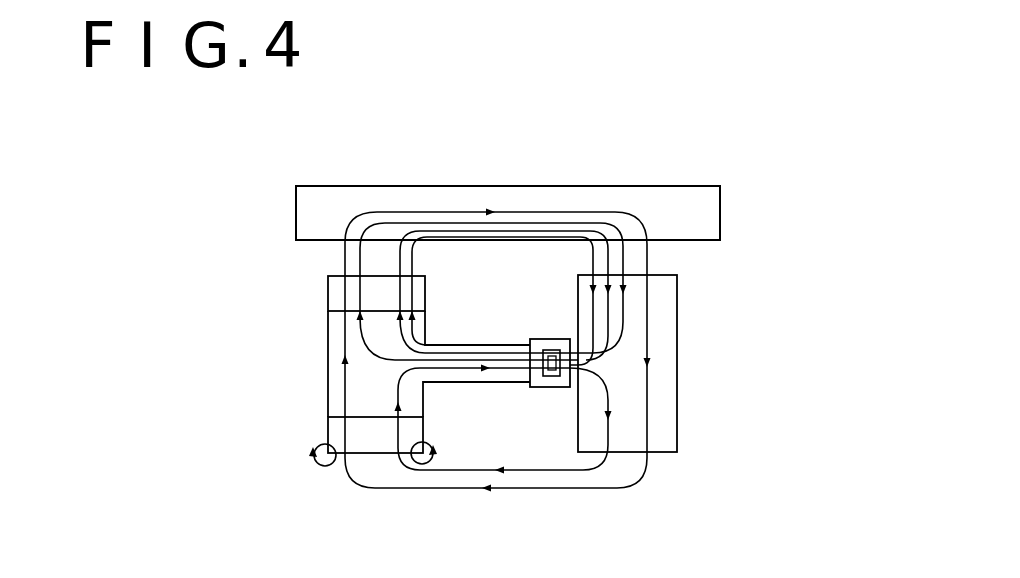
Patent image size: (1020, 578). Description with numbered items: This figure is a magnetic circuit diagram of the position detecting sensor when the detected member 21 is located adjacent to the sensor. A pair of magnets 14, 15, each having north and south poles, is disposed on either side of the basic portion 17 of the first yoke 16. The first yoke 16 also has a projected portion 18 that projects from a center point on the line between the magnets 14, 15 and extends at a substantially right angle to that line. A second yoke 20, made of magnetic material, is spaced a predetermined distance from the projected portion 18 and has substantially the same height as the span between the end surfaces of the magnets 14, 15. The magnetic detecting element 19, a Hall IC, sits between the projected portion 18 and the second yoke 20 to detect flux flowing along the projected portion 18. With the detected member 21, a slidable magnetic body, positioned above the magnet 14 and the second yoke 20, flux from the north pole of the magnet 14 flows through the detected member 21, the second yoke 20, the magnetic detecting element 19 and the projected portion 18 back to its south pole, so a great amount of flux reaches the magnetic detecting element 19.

The magnet 14 is at (328, 293).
The magnet 15 is at (358, 433).
The first yoke 16 is at (439, 321).
The basic portion 17 is at (338, 343).
The projected portion 18 is at (472, 345).
The magnetic detecting element 19 is at (541, 384).
The second yoke 20 is at (666, 432).
The detected member 21 is at (703, 212).